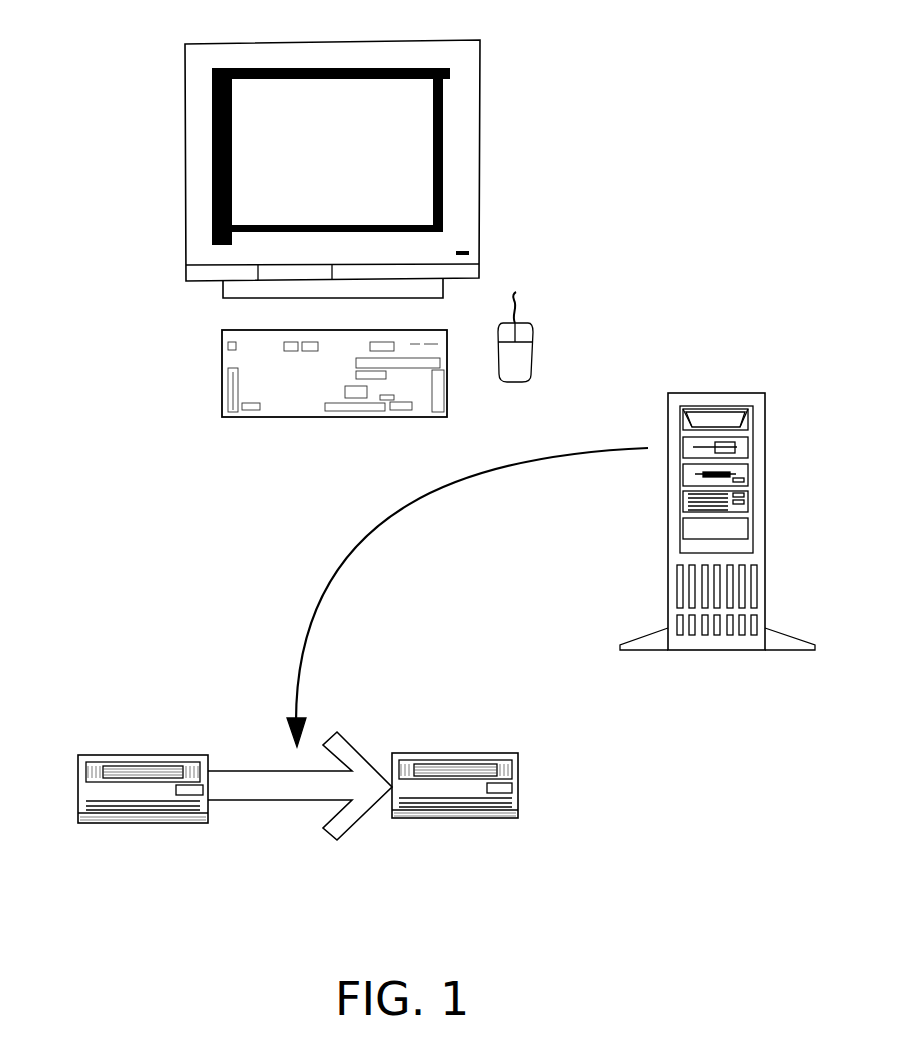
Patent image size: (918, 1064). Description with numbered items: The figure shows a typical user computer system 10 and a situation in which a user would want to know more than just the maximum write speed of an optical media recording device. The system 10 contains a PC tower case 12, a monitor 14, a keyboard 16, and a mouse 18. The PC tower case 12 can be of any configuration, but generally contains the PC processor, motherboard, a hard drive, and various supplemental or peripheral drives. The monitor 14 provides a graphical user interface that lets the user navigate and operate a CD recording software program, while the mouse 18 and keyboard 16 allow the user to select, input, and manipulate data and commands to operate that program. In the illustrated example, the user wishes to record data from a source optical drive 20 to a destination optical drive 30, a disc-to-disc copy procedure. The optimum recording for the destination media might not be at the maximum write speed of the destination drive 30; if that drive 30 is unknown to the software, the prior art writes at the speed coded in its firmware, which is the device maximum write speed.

The user computer system 10 is at (678, 104).
The PC tower case 12 is at (765, 465).
The monitor 14 is at (474, 146).
The keyboard 16 is at (225, 376).
The mouse 18 is at (531, 362).
The source optical drive 20 is at (78, 778).
The destination optical drive 30 is at (477, 754).